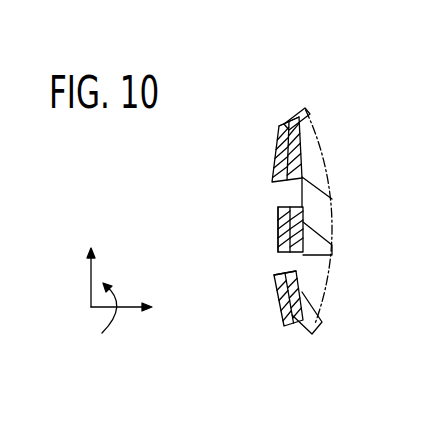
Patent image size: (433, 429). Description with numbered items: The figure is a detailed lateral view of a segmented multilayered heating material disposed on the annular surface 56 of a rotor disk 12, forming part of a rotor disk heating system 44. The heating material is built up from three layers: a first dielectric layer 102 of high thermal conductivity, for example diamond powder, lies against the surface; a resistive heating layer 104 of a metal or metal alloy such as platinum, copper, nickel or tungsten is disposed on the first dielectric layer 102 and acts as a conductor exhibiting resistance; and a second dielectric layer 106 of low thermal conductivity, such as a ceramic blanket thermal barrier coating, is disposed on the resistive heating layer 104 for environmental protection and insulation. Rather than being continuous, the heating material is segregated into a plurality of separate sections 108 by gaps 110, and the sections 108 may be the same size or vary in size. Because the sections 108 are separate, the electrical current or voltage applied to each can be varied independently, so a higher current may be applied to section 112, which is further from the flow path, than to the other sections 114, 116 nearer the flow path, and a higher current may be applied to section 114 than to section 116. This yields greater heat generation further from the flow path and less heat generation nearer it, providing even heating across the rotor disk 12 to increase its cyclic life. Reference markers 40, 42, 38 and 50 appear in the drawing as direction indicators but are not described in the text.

The rotor disk 12 is at (292, 121).
The annular surface 56 is at (300, 128).
The first dielectric layer 102 is at (280, 130).
The resistive heating layer 104 is at (275, 137).
The second dielectric layer 106 is at (272, 142).
The separate sections 108 is at (278, 220).
The gaps 110 is at (278, 197).
The section 112 is at (275, 278).
The section 114 is at (278, 240).
The section 116 is at (273, 160).
The rotor disk heating system 44 is at (161, 192).
The radial direction 50 is at (153, 228).
The y axis 40 is at (90, 282).
The rotation direction 42 is at (114, 297).
The x axis 38 is at (130, 312).